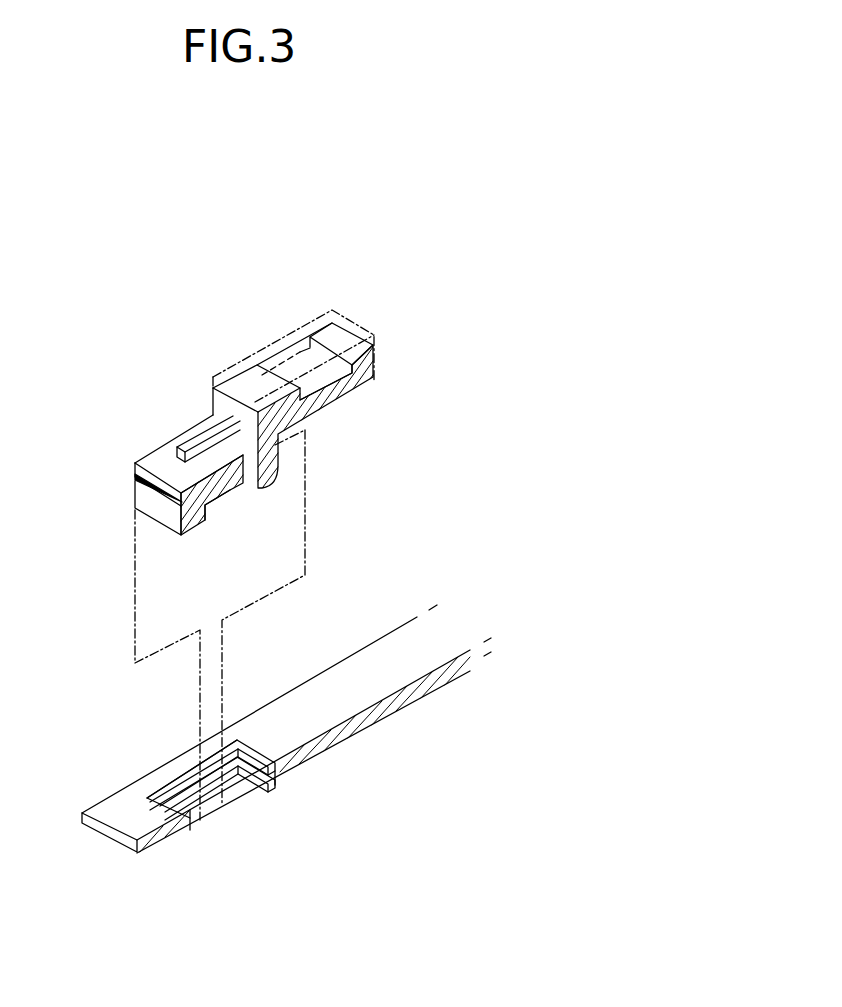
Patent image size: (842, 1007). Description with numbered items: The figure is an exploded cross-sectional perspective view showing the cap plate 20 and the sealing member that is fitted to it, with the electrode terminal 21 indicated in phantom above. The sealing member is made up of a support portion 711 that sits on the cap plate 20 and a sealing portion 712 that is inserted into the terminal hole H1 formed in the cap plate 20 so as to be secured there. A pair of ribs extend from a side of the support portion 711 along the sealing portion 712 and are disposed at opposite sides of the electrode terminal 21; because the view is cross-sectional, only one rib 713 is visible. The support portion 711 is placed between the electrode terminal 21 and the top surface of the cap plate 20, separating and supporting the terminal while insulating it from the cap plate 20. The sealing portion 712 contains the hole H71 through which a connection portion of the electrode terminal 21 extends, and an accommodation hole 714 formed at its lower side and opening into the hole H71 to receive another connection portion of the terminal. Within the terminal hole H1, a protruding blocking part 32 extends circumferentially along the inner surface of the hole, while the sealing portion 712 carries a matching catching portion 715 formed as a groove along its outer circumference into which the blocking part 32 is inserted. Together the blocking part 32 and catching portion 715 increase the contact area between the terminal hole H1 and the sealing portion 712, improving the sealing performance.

The cap plate 20 is at (357, 670).
The electrode terminal 21 is at (318, 312).
The blocking part 32 is at (255, 770).
The terminal hole H1 is at (247, 748).
The hole H71 is at (216, 512).
The support portion 711 is at (368, 369).
The sealing portion 712 is at (160, 462).
The rib 713 is at (197, 437).
The accommodation hole 714 is at (217, 512).
The catching portion 715 is at (137, 502).